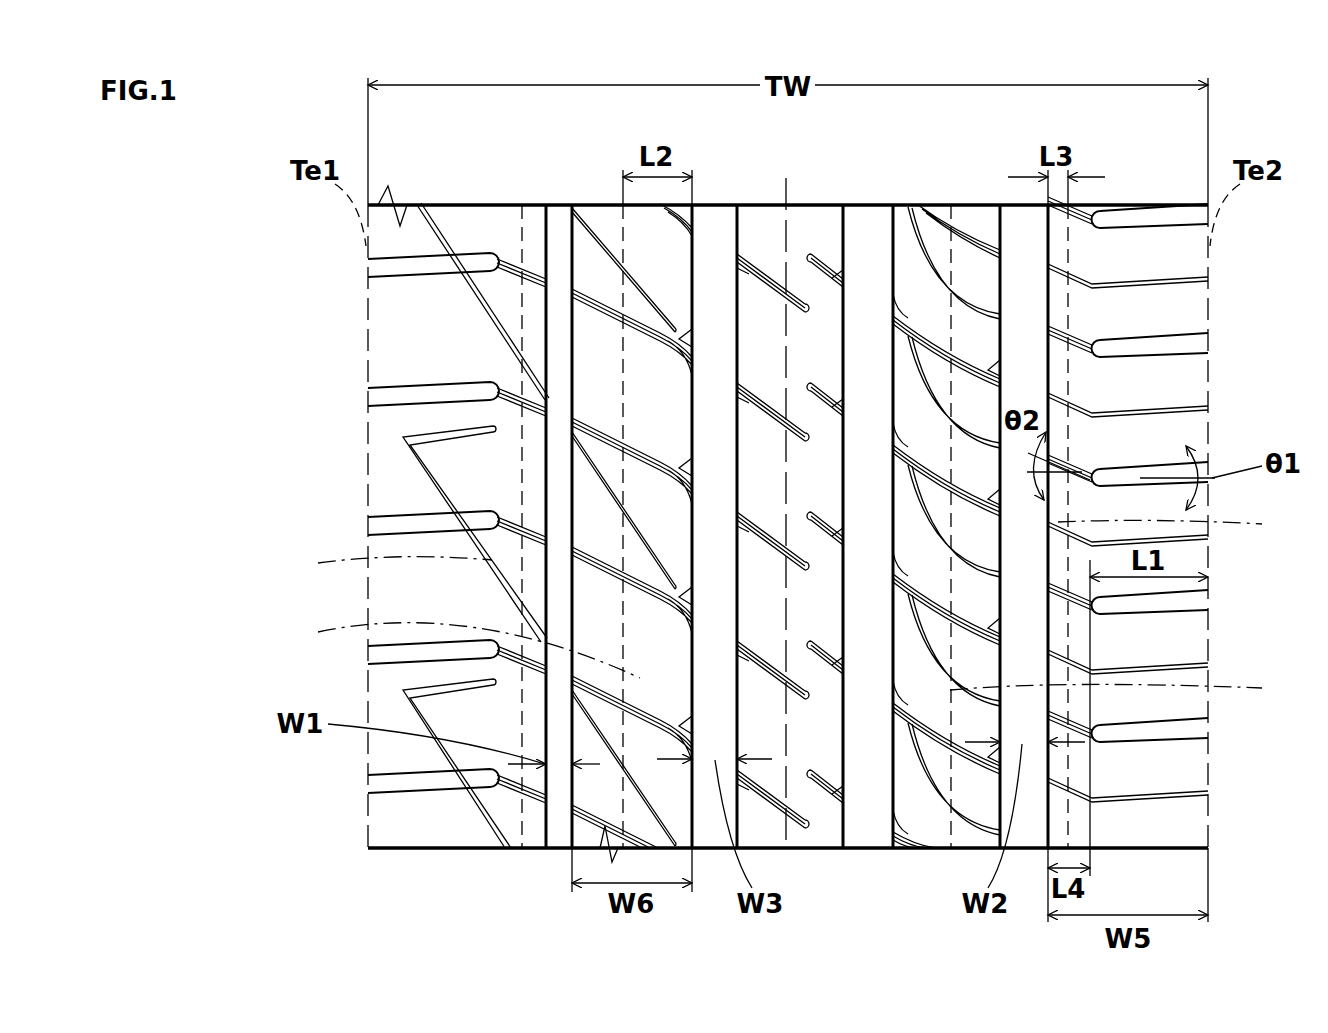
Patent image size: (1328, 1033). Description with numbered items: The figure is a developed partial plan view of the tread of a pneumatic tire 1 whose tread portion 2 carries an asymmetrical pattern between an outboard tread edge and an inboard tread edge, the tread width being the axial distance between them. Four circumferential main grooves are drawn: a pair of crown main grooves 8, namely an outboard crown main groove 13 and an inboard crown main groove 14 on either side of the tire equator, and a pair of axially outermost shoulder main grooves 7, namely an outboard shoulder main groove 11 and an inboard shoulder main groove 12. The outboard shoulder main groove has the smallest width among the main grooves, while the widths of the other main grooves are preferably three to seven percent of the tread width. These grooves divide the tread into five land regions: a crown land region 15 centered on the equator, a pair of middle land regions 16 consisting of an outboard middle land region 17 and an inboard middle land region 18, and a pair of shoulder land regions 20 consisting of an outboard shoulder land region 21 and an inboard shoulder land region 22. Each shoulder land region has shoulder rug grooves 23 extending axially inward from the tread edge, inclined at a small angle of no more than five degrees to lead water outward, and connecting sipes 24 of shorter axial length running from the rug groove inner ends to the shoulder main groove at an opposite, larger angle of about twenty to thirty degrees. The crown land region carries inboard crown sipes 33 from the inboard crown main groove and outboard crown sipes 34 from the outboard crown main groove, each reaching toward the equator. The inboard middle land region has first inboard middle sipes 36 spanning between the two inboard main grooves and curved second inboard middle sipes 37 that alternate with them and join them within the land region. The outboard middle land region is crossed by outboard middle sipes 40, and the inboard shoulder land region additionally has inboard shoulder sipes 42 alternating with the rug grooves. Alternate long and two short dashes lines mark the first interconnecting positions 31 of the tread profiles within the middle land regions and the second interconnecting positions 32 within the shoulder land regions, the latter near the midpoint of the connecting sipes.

The pneumatic tire 1 is at (897, 203).
The tread portion 2 is at (763, 203).
The shoulder main grooves 7 is at (787, 581).
The crown main grooves 8 is at (793, 581).
The outboard shoulder main groove 11 is at (558, 822).
The inboard shoulder main groove 12 is at (1025, 822).
The outboard crown main groove 13 is at (712, 822).
The inboard crown main groove 14 is at (870, 822).
The crown land region 15 is at (819, 241).
The middle land regions 16 is at (768, 508).
The outboard middle land region 17 is at (640, 473).
The inboard middle land region 18 is at (959, 508).
The shoulder land regions 20 is at (797, 473).
The outboard shoulder land region 21 is at (483, 220).
The inboard shoulder land region 22 is at (1137, 268).
The shoulder rug grooves 23 is at (424, 393).
The connecting sipes 24 is at (513, 274).
The first interconnecting positions 31 is at (790, 662).
The second interconnecting positions 32 is at (790, 545).
The inboard crown sipes 33 is at (827, 659).
The outboard crown sipes 34 is at (764, 522).
The first inboard middle sipes 36 is at (934, 737).
The second inboard middle sipes 37 is at (934, 265).
The outboard middle sipes 40 is at (594, 424).
The inboard shoulder sipes 42 is at (1132, 796).